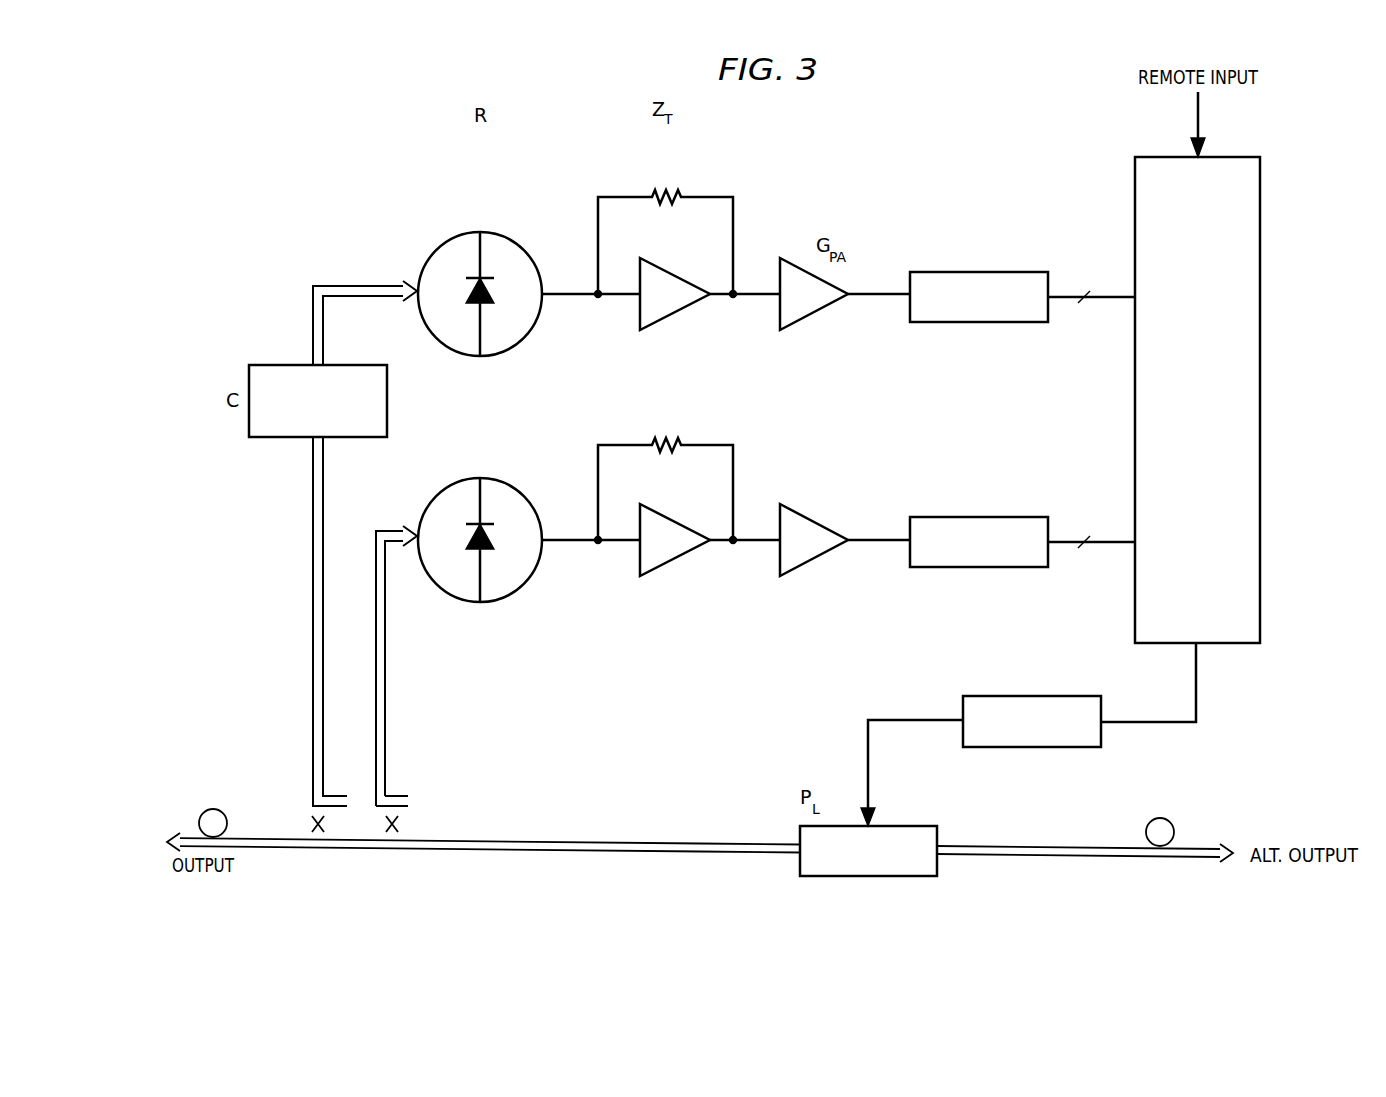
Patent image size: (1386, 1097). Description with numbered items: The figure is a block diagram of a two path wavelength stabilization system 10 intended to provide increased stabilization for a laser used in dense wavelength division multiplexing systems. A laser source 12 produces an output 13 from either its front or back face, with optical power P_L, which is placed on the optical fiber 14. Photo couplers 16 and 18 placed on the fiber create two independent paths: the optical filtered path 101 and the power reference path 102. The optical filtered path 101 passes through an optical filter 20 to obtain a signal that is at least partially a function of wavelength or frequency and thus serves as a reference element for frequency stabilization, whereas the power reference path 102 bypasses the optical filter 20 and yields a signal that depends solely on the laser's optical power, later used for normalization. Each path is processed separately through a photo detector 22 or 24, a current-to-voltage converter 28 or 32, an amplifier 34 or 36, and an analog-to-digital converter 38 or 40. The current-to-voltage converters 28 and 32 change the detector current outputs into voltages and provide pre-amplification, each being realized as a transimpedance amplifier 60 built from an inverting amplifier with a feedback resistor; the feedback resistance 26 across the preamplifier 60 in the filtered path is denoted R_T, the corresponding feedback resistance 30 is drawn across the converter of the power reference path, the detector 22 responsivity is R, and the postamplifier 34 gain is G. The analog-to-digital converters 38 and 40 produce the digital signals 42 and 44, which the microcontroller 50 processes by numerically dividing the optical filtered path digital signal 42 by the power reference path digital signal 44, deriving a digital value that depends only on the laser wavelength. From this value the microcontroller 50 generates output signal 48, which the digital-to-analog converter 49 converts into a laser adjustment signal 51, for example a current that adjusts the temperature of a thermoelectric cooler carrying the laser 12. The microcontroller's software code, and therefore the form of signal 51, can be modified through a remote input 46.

The two path wavelength stabilization system 10 is at (1037, 134).
The laser source 12 is at (938, 831).
The output 13 is at (792, 856).
The optical fiber 14 is at (592, 852).
The photo coupler 16 is at (310, 822).
The photo coupler 18 is at (400, 822).
The optical filter 20 is at (268, 439).
The photo detector 22 is at (518, 349).
The photo detector 24 is at (518, 595).
The feedback resistance 26 is at (682, 192).
The current-to-voltage converter 28 is at (664, 318).
The second feedback resistor Rf 30 is at (682, 440).
The current-to-voltage converter 32 is at (664, 564).
The amplifier 34 is at (802, 322).
The amplifier 36 is at (802, 568).
The analog-to-digital converter 38 is at (994, 324).
The analog-to-digital converter 40 is at (994, 569).
The optical filtered path digital signal 42 is at (1098, 304).
The power reference path digital signal 44 is at (1098, 549).
The remote input 46 is at (1200, 100).
The output signal 48 is at (1198, 700).
The digital-to-analog converter 49 is at (1102, 702).
The microcontroller 50 is at (1261, 412).
The laser adjustment signal 51 is at (912, 726).
The transimpedance amplifier 60 is at (600, 172).
The optical filtered path 101 is at (312, 696).
The power reference path 102 is at (386, 738).